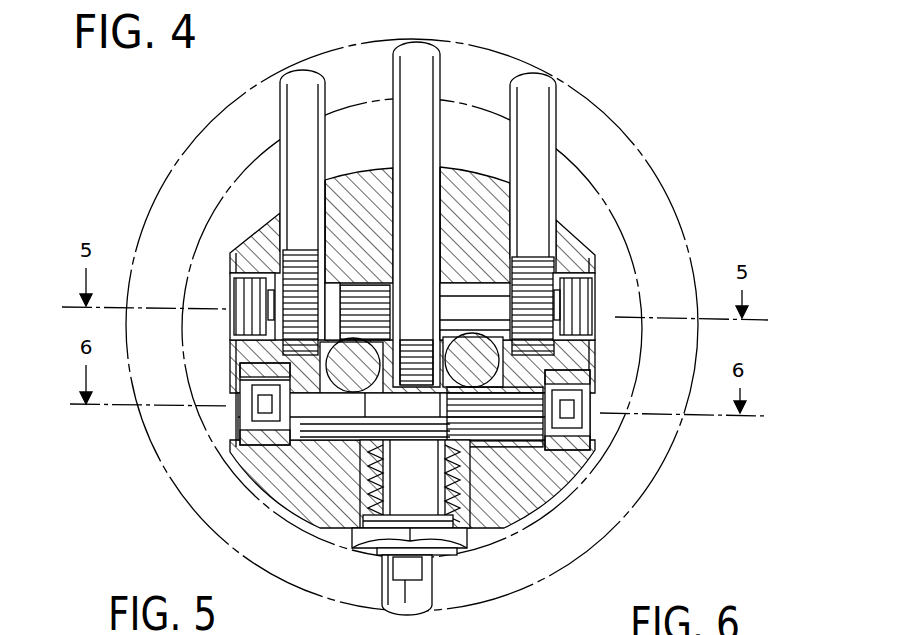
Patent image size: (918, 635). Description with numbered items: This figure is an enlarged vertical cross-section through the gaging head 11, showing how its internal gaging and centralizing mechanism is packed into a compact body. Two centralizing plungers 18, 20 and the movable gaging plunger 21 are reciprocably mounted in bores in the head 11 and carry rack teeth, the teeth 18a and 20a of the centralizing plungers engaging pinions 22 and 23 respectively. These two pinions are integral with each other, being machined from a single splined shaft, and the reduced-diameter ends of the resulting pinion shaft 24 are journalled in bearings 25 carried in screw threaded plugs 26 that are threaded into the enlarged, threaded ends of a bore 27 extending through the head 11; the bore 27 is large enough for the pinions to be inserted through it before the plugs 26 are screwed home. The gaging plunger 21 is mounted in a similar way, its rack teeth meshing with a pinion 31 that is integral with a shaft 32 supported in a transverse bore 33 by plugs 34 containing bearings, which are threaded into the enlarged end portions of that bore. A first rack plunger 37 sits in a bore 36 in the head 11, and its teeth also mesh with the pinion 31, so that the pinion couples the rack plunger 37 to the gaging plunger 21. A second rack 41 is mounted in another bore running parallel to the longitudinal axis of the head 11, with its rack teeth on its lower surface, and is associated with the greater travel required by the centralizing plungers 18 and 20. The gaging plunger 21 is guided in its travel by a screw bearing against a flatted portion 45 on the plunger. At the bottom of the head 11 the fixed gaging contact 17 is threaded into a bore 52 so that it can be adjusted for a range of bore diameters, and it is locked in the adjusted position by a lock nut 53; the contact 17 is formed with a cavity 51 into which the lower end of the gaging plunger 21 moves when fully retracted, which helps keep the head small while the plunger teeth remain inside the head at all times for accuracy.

The gaging head 11 is at (455, 158).
The fixed gaging contact 17 is at (383, 578).
The centralizing plunger 18 is at (300, 85).
The rack teeth 18a is at (300, 262).
The centralizing plunger 20 is at (538, 100).
The rack teeth 20a is at (556, 252).
The gaging plunger 21 is at (423, 80).
The pinion 22 is at (333, 395).
The pinion 23 is at (482, 430).
The pinion shaft 24 is at (240, 420).
The bearing 25 is at (242, 394).
The screw threaded plug 26 is at (586, 393).
The bore 27 is at (393, 484).
The pinion 31 is at (372, 310).
The shaft 32 is at (490, 303).
The transverse bore 33 is at (330, 287).
The plug 34 is at (238, 292).
The bore 36 is at (385, 348).
The first rack plunger 37 is at (380, 405).
The second rack 41 is at (427, 405).
The flatted portion 45 is at (418, 245).
The cavity 51 is at (368, 499).
The bore 52 is at (466, 533).
The lock nut 53 is at (460, 556).